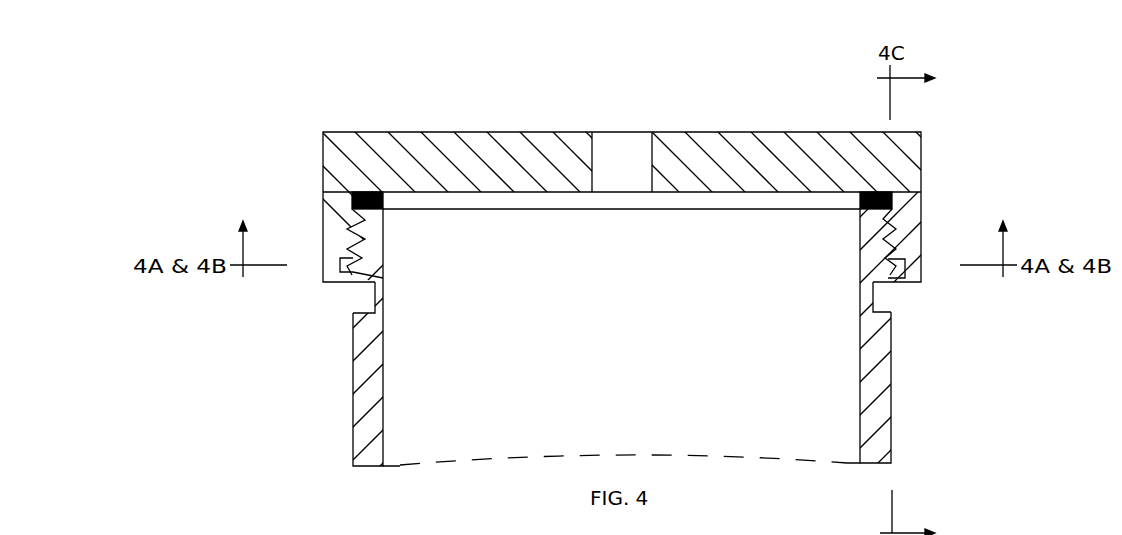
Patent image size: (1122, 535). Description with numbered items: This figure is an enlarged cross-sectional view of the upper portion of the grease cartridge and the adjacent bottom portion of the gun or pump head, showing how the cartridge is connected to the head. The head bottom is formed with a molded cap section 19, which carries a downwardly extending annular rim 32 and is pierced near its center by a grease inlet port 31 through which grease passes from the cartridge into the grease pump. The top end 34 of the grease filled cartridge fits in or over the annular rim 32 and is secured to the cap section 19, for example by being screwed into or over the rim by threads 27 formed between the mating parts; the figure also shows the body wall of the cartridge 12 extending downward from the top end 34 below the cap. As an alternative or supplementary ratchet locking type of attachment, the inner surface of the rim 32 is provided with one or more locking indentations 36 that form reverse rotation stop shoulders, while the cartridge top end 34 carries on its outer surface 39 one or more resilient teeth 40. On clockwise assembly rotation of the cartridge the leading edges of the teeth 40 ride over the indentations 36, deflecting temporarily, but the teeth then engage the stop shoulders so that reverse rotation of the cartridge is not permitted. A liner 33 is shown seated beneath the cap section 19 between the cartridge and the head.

The container body 12 is at (886, 385).
The cap section 19 is at (668, 132).
The threads 27 is at (346, 213).
The grease inlet port 31 is at (606, 150).
The annular rim 32 is at (921, 250).
The liner 33 is at (358, 196).
The top end 34 is at (383, 254).
The locking indentations 36 is at (345, 283).
The outer surface 39 is at (368, 277).
The resilient teeth 40 is at (349, 266).